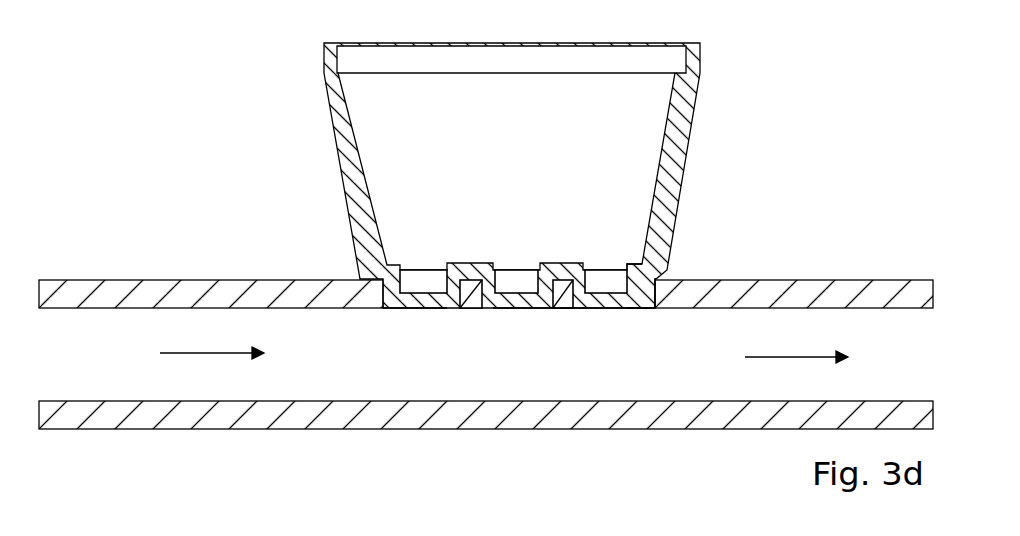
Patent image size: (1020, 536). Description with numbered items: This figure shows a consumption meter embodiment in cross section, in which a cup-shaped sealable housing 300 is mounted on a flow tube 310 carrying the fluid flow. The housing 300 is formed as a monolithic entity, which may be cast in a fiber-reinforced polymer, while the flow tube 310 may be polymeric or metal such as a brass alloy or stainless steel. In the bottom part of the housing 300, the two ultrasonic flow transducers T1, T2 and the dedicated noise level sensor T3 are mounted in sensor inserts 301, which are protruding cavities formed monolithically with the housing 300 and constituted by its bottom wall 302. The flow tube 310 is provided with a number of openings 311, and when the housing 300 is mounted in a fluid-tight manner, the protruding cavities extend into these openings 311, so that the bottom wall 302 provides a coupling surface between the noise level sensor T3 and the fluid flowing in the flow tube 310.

The housing 300 is at (344, 133).
The sensor insert 301 is at (418, 302).
The bottom wall 302 is at (643, 294).
The flow tube 310 is at (180, 288).
The opening 311 is at (568, 303).
The flow transducer T1 is at (436, 278).
The flow transducer T2 is at (607, 276).
The noise level sensor T3 is at (517, 278).